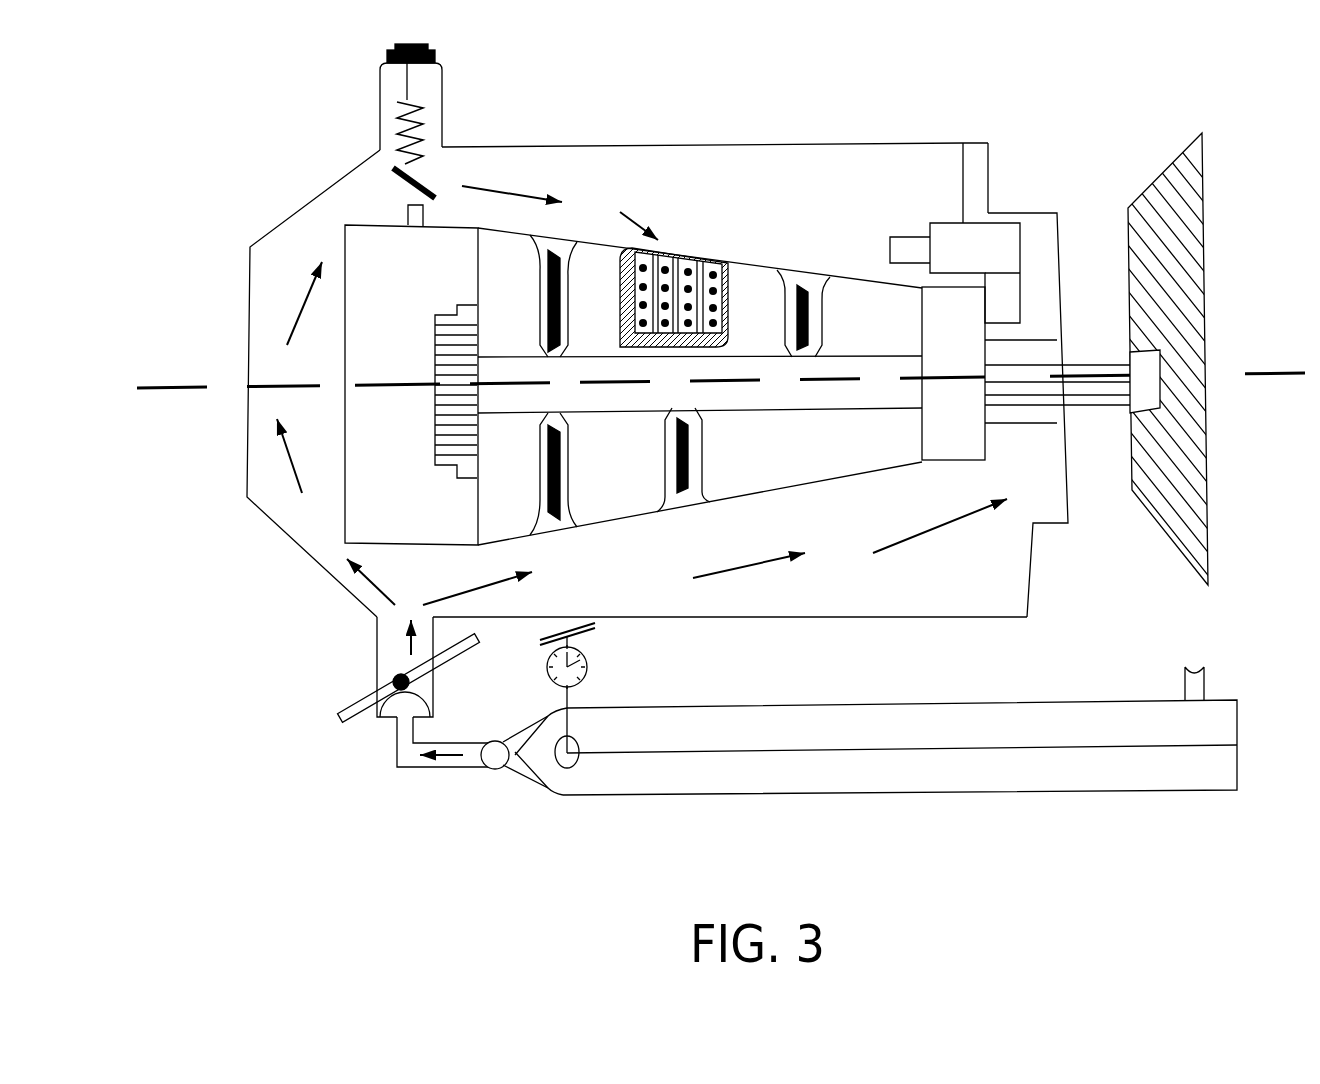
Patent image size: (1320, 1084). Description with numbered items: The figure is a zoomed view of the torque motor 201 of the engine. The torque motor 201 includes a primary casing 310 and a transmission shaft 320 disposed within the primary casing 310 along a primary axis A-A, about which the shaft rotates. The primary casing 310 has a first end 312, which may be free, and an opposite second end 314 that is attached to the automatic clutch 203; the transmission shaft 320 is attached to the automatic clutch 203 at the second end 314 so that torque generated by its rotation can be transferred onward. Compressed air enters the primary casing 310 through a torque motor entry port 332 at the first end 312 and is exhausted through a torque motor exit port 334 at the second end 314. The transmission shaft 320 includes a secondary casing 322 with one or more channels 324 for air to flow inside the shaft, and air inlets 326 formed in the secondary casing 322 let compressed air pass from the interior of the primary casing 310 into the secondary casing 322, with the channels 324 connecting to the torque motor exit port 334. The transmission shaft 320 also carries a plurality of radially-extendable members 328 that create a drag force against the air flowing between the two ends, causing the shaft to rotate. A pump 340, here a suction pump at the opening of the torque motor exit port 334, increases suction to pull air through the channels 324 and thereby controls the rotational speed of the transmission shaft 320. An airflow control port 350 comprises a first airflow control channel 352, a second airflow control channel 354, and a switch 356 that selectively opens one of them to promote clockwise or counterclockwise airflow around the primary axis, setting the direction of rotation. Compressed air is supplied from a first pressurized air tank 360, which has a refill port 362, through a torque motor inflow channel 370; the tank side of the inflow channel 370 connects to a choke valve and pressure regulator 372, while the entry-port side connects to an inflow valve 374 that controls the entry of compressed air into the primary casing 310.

The torque motor 201 is at (707, 454).
The automatic clutch 203 is at (1185, 245).
The primary casing 310 is at (247, 313).
The first end 312 is at (300, 362).
The second end 314 is at (1033, 490).
The transmission shaft 320 is at (1022, 423).
The secondary casing 322 is at (365, 258).
The channels 324 is at (873, 383).
The air inlets 326 is at (668, 255).
The radially-extendable members 328 is at (673, 490).
The torque motor entry port 332 is at (395, 635).
The torque motor exit port 334 is at (985, 165).
The pump 340 is at (960, 243).
The airflow control port 350 is at (424, 121).
The first airflow control channel 352 is at (383, 122).
The second airflow control channel 354 is at (445, 120).
The switch 356 is at (385, 80).
The first pressurized air tank 360 is at (870, 722).
The refill port 362 is at (1183, 685).
The torque motor inflow channel 370 is at (410, 745).
The pressure regulator 372 is at (600, 633).
The inflow valve 374 is at (350, 705).